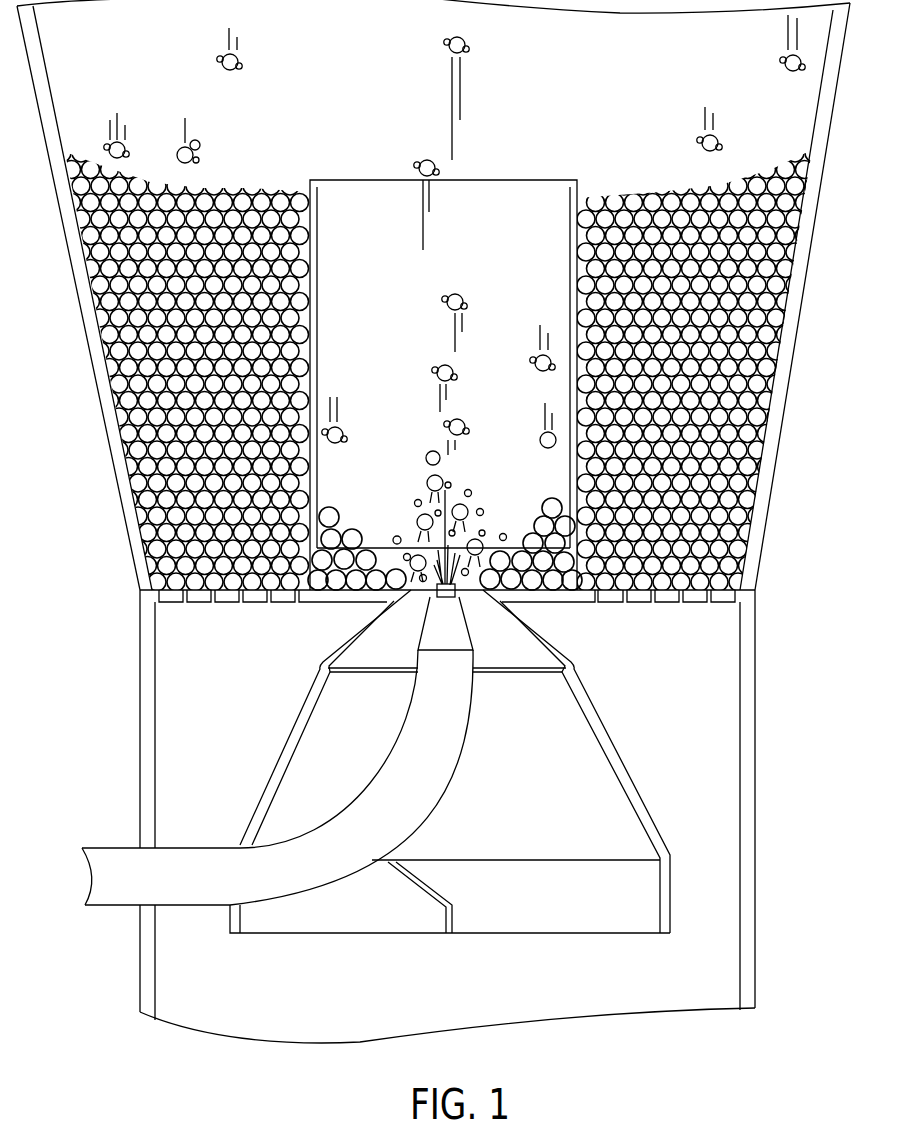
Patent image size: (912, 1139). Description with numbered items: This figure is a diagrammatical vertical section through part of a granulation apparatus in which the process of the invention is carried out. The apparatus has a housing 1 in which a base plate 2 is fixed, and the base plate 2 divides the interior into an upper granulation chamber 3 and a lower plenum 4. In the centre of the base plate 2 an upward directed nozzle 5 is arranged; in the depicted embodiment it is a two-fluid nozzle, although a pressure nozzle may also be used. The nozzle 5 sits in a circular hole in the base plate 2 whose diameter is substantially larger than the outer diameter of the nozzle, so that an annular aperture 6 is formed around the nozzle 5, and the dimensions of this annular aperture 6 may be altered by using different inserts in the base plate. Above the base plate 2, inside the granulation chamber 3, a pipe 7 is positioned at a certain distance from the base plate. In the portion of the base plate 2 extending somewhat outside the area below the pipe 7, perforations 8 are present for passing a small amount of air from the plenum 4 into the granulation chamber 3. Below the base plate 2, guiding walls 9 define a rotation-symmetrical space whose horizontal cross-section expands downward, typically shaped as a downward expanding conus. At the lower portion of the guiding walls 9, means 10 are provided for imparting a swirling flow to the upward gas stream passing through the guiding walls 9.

The housing 1 is at (808, 248).
The base plate 2 is at (691, 600).
The granulation chamber 3 is at (677, 74).
The plenum 4 is at (631, 984).
The nozzle 5 is at (458, 592).
The annular aperture 6 is at (420, 593).
The pipe 7 is at (570, 247).
The perforations 8 is at (625, 604).
The guiding walls 9 is at (626, 769).
The means for imparting a swirling flow 10 is at (412, 891).